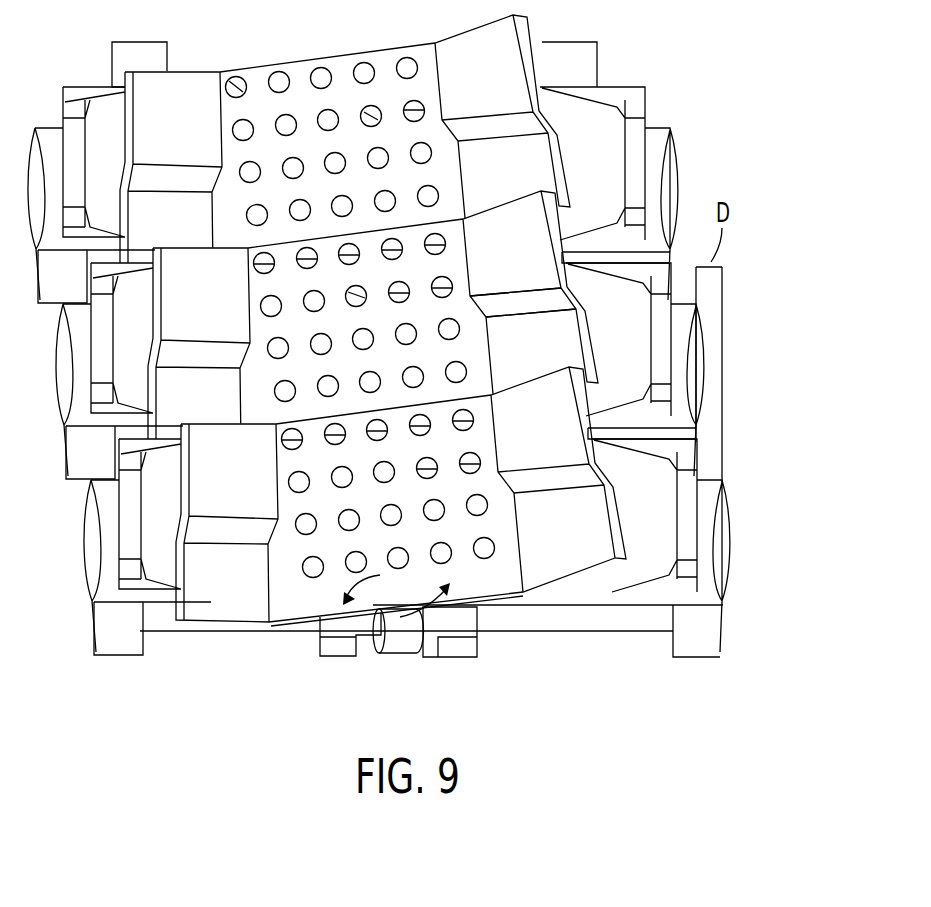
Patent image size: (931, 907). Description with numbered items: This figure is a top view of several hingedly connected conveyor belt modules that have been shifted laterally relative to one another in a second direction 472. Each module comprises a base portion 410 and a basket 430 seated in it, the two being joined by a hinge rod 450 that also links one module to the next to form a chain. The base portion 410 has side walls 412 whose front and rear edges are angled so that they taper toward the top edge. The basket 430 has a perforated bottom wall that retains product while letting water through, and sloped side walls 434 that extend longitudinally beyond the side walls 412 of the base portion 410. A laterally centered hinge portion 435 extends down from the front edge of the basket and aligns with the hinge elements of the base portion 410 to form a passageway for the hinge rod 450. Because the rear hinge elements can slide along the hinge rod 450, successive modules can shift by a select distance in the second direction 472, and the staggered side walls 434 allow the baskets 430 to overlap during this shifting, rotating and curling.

The base portion 410 is at (647, 125).
The side walls 412 is at (75, 110).
The basket 430 is at (158, 130).
The side walls 434 is at (510, 170).
The hinge portion 435 is at (407, 633).
The hinge rod 450 is at (573, 615).
The second direction 472 is at (702, 308).